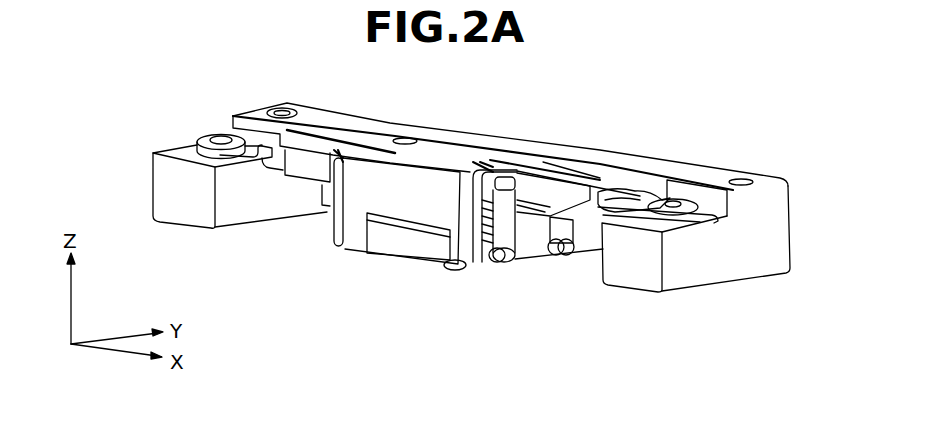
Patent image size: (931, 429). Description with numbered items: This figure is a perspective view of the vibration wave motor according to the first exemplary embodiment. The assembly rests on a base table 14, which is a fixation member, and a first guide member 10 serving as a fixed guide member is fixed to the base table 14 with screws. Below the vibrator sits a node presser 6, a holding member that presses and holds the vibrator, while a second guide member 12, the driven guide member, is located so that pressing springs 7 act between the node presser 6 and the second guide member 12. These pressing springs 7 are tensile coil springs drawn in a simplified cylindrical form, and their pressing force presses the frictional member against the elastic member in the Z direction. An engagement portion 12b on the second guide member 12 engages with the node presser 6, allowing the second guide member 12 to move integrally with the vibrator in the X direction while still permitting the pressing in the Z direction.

The node presser 6 is at (530, 258).
The pressing springs 7 is at (503, 255).
The first guide member 10 is at (633, 190).
The second guide member 12 is at (456, 158).
The engagement portion 12b is at (353, 237).
The base table 14 is at (713, 265).